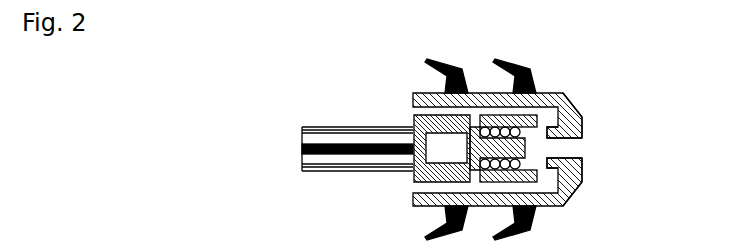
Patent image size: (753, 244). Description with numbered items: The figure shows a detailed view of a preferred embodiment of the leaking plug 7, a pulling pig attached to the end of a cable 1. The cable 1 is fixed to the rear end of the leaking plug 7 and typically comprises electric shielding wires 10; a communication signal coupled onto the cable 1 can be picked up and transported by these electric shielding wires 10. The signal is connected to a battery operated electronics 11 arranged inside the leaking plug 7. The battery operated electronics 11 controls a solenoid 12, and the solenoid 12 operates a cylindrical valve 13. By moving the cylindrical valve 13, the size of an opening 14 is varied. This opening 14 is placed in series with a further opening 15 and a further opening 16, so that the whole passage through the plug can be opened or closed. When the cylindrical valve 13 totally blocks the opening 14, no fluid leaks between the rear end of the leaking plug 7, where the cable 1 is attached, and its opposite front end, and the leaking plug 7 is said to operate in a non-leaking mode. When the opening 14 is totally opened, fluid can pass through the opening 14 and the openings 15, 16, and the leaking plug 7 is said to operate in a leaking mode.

The cable 1 is at (348, 172).
The leaking plug 7 is at (580, 93).
The electric shielding wires 10 is at (347, 128).
The battery operated electronics 11 is at (411, 93).
The solenoid 12 is at (487, 115).
The cylindrical valve 13 is at (539, 93).
The opening 14 is at (559, 204).
The opening 15 is at (581, 148).
The opening 16 is at (421, 206).